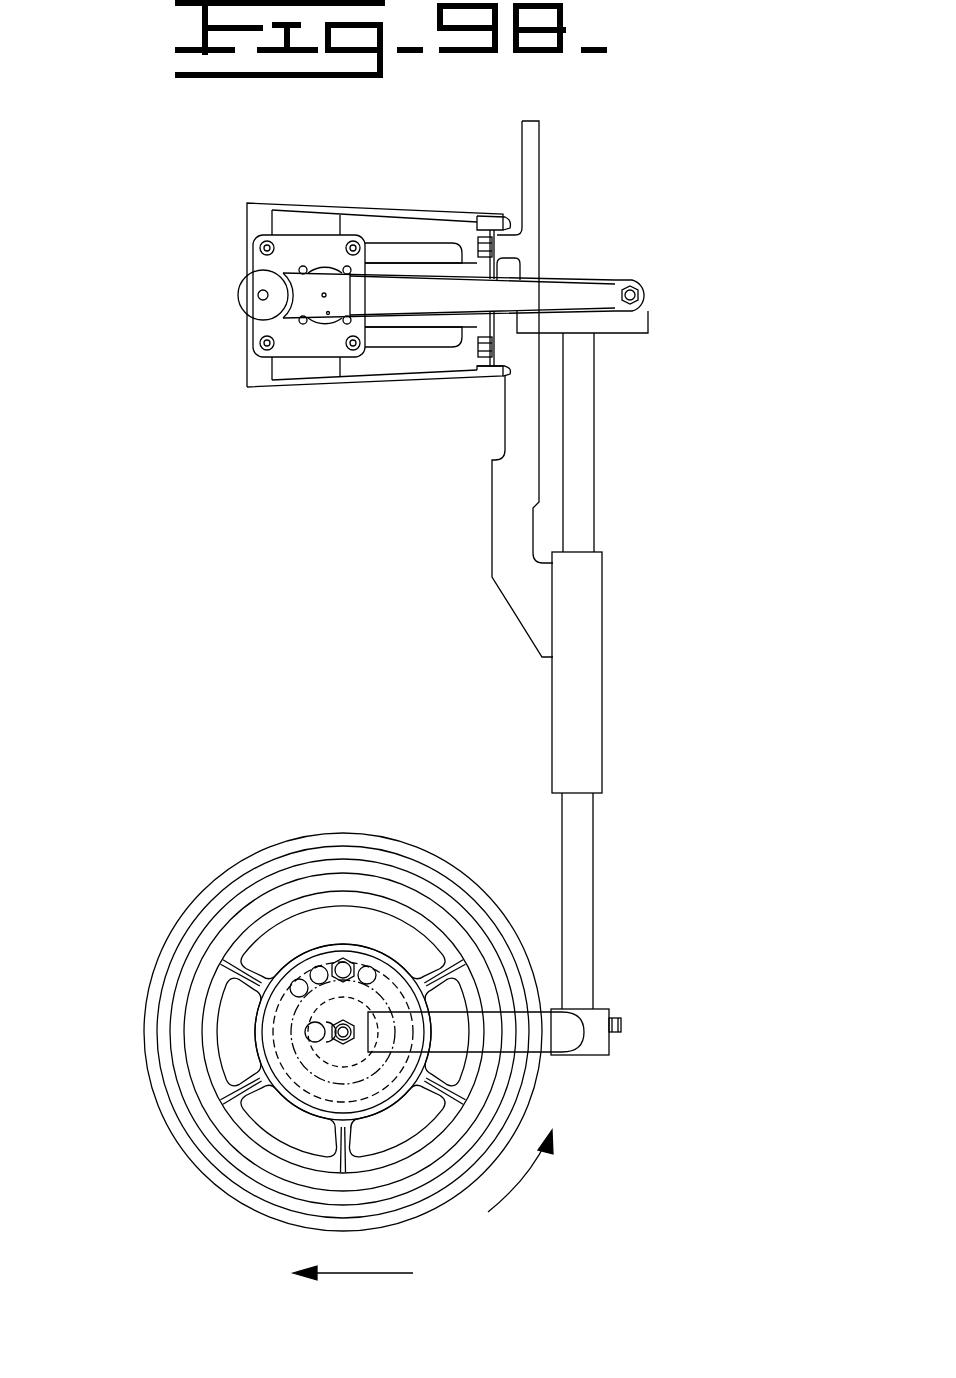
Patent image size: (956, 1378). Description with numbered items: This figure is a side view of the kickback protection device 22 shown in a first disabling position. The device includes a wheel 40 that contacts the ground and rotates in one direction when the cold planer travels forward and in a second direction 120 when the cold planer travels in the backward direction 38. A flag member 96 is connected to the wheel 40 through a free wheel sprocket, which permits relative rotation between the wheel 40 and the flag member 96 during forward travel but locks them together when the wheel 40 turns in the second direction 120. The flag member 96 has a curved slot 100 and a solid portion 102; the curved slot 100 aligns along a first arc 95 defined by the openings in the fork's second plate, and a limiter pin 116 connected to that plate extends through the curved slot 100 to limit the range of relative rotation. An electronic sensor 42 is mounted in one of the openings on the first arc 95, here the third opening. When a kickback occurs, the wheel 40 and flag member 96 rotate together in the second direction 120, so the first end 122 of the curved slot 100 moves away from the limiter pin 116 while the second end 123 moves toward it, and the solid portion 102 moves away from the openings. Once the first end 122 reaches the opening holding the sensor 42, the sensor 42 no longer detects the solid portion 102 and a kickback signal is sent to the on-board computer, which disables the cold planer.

The kickback protection device 22 is at (670, 480).
The backward direction 38 is at (357, 1273).
The wheel 40 is at (200, 891).
The electronic sensor 42 is at (355, 958).
The first arc 95 is at (270, 1068).
The flag member 96 is at (268, 1032).
The curved slot 100 is at (400, 1066).
The solid portion 102 is at (277, 1060).
The limiter pin 116 is at (468, 1010).
The second direction 120 is at (523, 1178).
The first end 122 is at (330, 960).
The second end 123 is at (395, 1095).